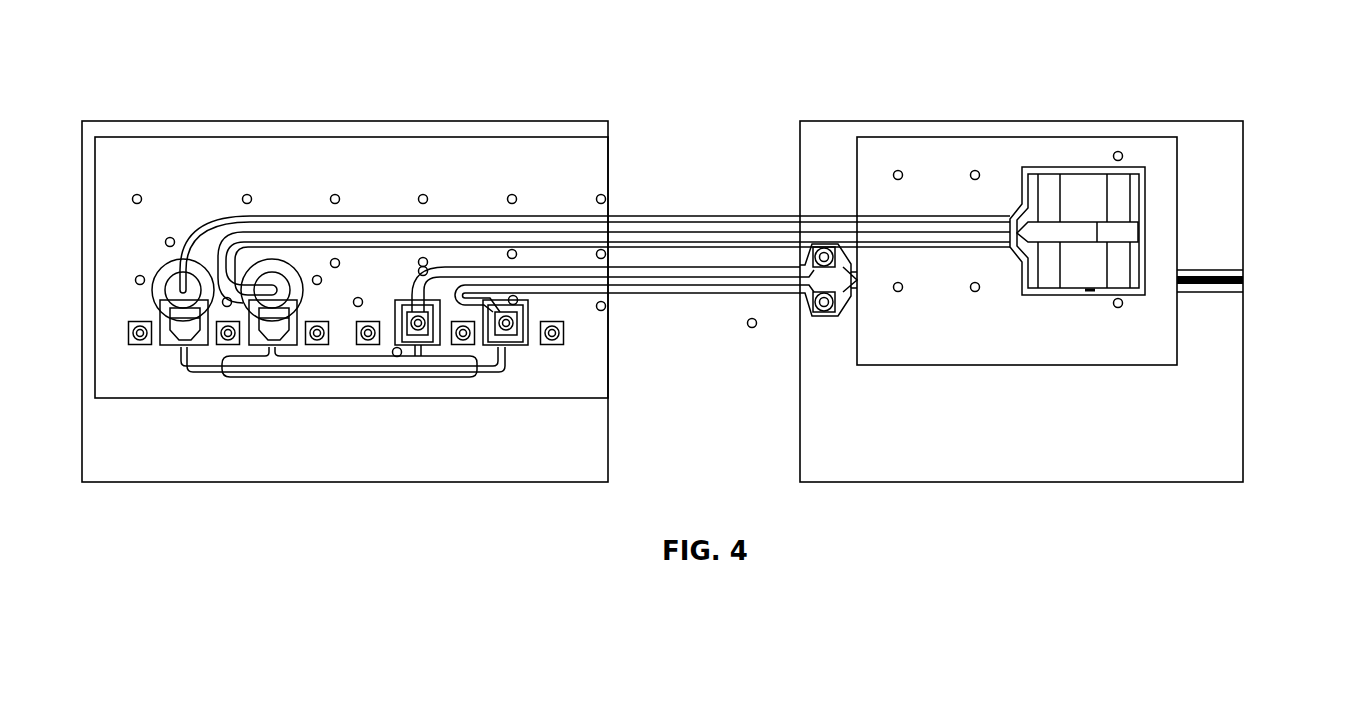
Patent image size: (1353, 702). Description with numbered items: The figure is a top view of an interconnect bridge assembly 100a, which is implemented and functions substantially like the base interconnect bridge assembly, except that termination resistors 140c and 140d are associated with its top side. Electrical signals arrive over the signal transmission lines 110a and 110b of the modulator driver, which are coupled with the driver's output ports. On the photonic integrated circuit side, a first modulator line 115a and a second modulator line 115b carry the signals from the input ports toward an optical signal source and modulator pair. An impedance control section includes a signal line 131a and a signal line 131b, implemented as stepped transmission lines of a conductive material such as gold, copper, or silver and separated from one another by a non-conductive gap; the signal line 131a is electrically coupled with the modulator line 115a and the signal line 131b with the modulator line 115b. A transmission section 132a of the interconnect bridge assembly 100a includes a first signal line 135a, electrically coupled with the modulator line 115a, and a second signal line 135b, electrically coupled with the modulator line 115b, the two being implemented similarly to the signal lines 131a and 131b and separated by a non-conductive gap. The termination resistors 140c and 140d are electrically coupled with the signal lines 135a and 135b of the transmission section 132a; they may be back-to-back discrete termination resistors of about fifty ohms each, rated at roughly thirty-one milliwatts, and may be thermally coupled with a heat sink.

The interconnect bridge assembly 100a is at (738, 134).
The signal transmission line 110a is at (1190, 292).
The signal transmission line 110b is at (1222, 268).
The first modulator line 115a is at (275, 378).
The second modulator line 115b is at (367, 375).
The signal line 131a is at (708, 296).
The signal line 131b is at (682, 278).
The transmission section 132a is at (910, 213).
The first signal line 135a is at (455, 228).
The second signal line 135b is at (330, 238).
The termination resistor 140c is at (1130, 185).
The termination resistor 140d is at (1140, 262).